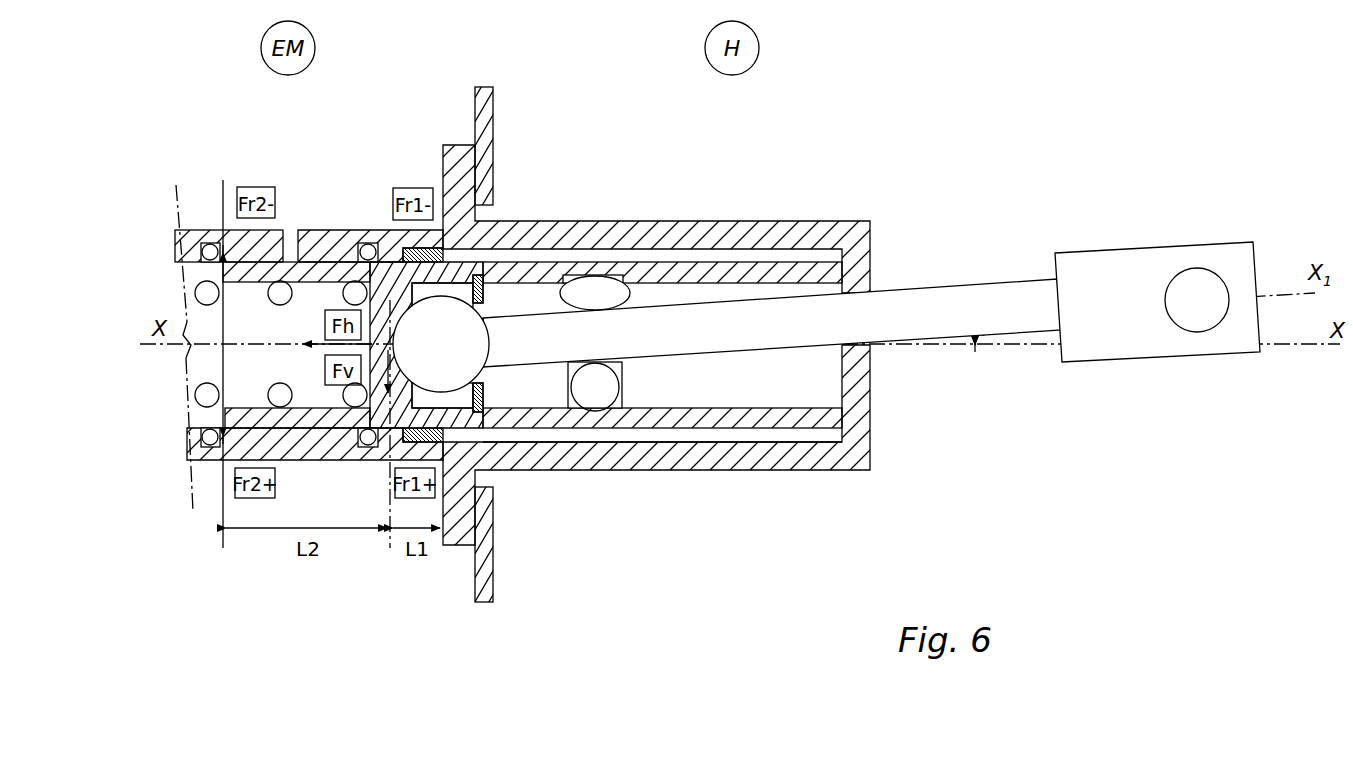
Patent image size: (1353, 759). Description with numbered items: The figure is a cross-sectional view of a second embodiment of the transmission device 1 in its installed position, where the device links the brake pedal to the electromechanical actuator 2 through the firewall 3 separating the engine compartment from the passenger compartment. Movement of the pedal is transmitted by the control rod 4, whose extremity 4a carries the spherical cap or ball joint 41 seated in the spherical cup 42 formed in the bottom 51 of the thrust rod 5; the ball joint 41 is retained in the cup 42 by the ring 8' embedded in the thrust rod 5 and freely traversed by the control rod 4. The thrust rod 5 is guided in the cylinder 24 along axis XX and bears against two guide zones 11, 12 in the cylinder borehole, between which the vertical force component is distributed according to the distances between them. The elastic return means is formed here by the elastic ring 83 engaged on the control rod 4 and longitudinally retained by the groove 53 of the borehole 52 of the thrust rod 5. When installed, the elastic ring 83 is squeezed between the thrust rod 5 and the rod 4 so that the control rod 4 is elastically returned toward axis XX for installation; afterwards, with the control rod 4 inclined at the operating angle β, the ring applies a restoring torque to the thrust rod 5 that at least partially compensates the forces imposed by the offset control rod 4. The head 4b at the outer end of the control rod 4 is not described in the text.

The transmission device 1 is at (753, 156).
The electromechanical actuator 2 is at (191, 210).
The firewall 3 is at (485, 110).
The control rod 4 is at (798, 313).
The extremity of control rod 4a is at (487, 322).
The push rod coupling head 4b is at (1118, 274).
The thrust rod 5 is at (762, 422).
The ring 8' is at (555, 395).
The guide zone 11 is at (418, 254).
The guide zone 12 is at (222, 252).
The cylinder 24 is at (258, 405).
The spherical cap 41 is at (427, 339).
The spherical cup 42 is at (402, 297).
The bottom 51 is at (366, 300).
The borehole 52 is at (768, 410).
The groove 53 is at (568, 276).
The elastic ring 83 is at (605, 292).